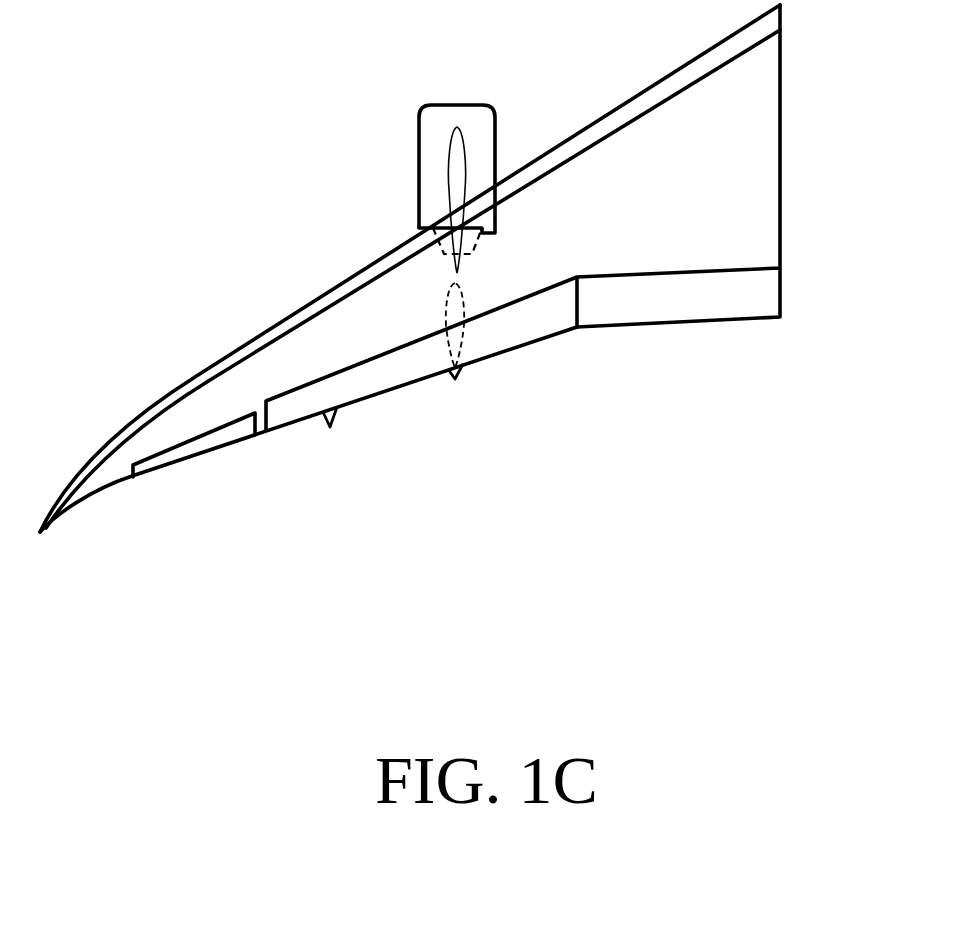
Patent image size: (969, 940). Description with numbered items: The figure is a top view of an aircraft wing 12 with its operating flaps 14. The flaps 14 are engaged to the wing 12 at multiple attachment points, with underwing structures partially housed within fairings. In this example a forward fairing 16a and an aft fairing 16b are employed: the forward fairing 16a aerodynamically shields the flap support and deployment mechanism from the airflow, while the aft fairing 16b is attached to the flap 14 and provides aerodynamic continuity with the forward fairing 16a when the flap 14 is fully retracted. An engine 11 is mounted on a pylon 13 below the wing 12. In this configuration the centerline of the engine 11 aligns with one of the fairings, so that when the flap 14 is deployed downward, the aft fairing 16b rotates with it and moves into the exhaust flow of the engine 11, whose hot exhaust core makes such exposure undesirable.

The engine 11 is at (418, 120).
The wing 12 is at (410, 292).
The pylon 13 is at (453, 157).
The flap 14 is at (375, 383).
The forward fairing 16a is at (463, 292).
The aft fairing 16b is at (330, 427).